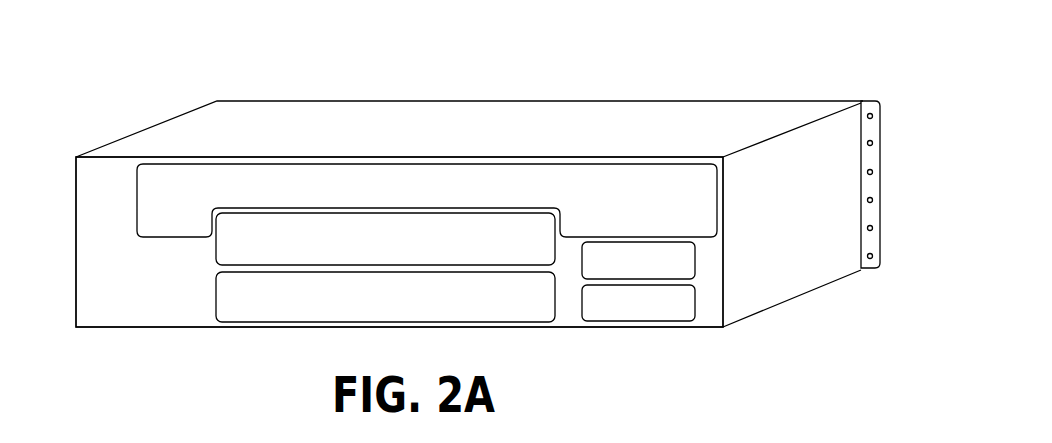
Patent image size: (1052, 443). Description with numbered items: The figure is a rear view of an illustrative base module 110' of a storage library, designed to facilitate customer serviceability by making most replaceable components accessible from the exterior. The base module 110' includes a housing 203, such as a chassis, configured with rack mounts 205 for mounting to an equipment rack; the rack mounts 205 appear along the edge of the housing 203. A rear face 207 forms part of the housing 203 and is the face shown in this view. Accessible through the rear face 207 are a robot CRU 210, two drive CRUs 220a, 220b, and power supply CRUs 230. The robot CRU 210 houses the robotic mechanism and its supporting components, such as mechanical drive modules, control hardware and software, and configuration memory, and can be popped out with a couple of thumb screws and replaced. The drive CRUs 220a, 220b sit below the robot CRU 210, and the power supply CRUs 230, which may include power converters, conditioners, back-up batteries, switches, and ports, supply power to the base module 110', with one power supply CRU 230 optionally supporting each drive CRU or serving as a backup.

The base module 110' is at (864, 31).
The housing 203 is at (174, 118).
The rack mounts 205 is at (881, 152).
The rear face 207 is at (157, 308).
The robot CRU 210 is at (507, 196).
The drive CRU 220a is at (470, 250).
The drive CRU 220b is at (470, 305).
The power supply CRUs 230 is at (695, 300).